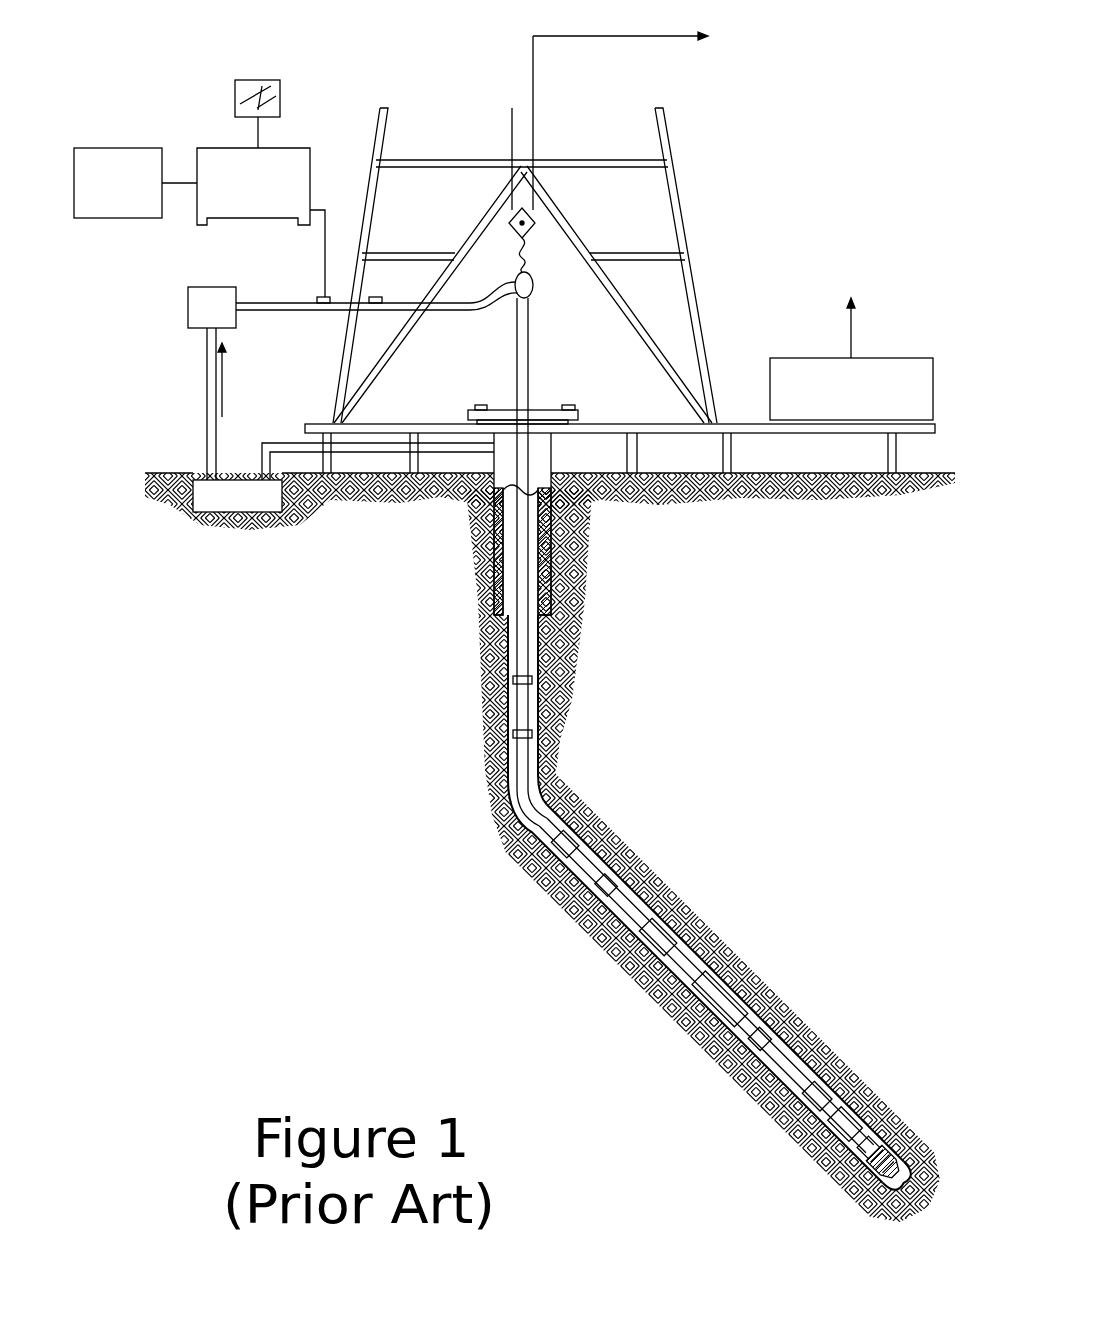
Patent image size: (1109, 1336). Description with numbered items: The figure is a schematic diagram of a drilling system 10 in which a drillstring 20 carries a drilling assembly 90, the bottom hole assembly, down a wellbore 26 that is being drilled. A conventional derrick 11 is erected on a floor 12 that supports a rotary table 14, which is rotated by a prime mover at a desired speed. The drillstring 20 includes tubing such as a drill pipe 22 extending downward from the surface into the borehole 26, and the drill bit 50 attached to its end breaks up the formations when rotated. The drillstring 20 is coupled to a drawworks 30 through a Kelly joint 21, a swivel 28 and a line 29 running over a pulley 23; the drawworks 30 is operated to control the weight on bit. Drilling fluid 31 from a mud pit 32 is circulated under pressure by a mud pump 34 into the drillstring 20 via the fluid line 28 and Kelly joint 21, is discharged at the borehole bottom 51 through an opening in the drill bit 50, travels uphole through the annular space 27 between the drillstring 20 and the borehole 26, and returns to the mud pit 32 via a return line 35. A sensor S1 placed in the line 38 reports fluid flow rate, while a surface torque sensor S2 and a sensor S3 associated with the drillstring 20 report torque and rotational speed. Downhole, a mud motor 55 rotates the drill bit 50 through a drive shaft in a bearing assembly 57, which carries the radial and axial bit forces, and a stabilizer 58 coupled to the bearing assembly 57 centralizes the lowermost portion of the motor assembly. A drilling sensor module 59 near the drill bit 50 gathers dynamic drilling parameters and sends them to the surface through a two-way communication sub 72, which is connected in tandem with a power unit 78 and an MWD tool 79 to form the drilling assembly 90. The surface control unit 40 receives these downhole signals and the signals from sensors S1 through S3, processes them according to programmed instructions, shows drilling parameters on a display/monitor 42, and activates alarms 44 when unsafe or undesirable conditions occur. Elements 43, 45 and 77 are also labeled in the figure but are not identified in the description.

The drilling system 10 is at (450, 53).
The derrick 11 is at (688, 226).
The floor 12 is at (712, 423).
The rotary table 14 is at (540, 410).
The drillstring 20 is at (540, 690).
The Kelly joint 21 is at (530, 318).
The drill pipe 22 is at (495, 660).
The pulley 23 is at (529, 236).
The wellbore 26 is at (555, 820).
The annular space 27 is at (572, 826).
The swivel 28 is at (518, 310).
The line 29 is at (540, 145).
The drawworks 30 is at (920, 358).
The drilling fluid 31 is at (215, 497).
The mud pit 32 is at (265, 525).
The mud pump 34 is at (188, 297).
The return line 35 is at (468, 457).
The line 38 is at (300, 312).
The surface control unit 40 is at (232, 148).
The display/monitor 42 is at (245, 80).
The sensor 43 is at (322, 297).
The alarms 44 is at (140, 148).
The signal line 45 is at (318, 206).
The drill bit 50 is at (898, 1157).
The borehole bottom 51 is at (870, 1197).
The downhole motor 55 is at (737, 982).
The bearing assembly 57 is at (838, 1090).
The stabilizer 58 is at (860, 1105).
The drilling sensor module 59 is at (848, 1148).
The communication sub 72 is at (505, 765).
The drill string 77 is at (563, 890).
The power unit 78 is at (525, 815).
The MWD tool 79 is at (535, 837).
The drilling assembly 90 is at (822, 829).
The sensor S1 is at (380, 297).
The surface torque sensor S2 is at (573, 405).
The sensor S3 is at (478, 405).